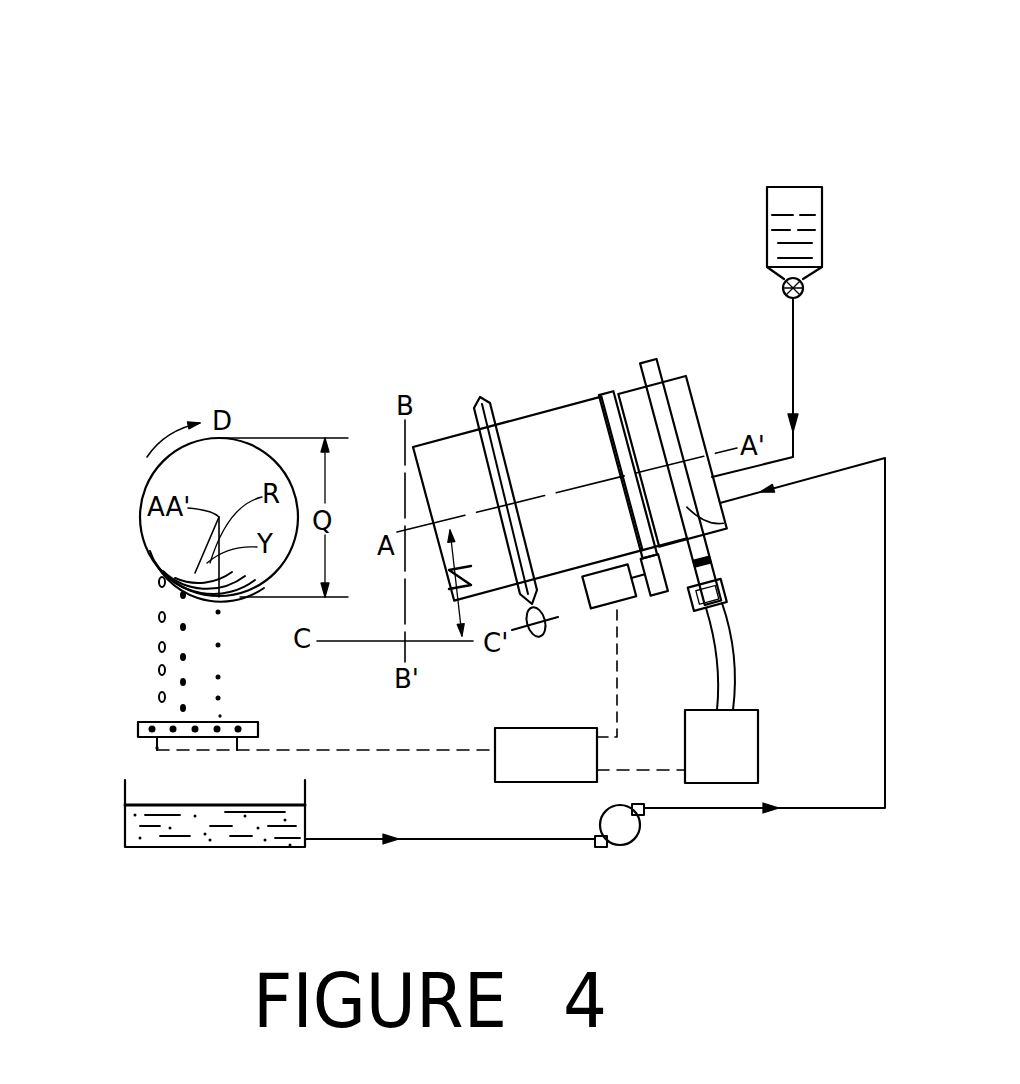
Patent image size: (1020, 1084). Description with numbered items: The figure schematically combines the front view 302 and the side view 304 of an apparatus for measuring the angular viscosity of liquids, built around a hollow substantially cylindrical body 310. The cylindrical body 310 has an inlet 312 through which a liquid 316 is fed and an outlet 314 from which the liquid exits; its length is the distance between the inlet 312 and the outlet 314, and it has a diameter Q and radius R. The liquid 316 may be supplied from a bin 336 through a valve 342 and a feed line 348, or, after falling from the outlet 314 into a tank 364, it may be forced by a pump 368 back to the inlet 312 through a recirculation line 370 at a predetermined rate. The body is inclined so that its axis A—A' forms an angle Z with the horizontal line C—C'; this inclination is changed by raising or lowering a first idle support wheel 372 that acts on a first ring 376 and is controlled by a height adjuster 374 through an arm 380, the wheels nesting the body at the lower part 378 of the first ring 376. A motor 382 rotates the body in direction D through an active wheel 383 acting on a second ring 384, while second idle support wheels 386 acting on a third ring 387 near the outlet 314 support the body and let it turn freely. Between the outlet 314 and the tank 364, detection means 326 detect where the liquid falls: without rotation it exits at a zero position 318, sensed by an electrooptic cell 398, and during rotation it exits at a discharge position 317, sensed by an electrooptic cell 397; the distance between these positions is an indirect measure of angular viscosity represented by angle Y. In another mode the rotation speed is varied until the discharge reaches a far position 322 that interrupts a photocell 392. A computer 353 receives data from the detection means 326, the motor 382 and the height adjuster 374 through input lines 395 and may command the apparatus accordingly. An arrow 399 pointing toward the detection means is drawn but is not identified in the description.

The front view 302 is at (250, 280).
The side view 304 is at (387, 130).
The hollow substantially cylindrical body 310 is at (503, 322).
The inlet 312 is at (694, 400).
The outlet 314 is at (223, 493).
The liquid 316 is at (803, 213).
The discharge position 317 is at (182, 682).
The zero position 318 is at (218, 645).
The far position 322 is at (160, 582).
The detection means 326 is at (258, 730).
The bin 336 is at (767, 230).
The valve 342 is at (805, 288).
The feed line 348 is at (793, 395).
The computer 353 is at (553, 775).
The tank 364 is at (307, 803).
The pump 368 is at (625, 845).
The recirculation line 370 is at (738, 815).
The first idle support wheel 372 is at (705, 600).
The height adjuster 374 is at (727, 750).
The first ring 376 is at (648, 362).
The lower part 378 is at (727, 530).
The arm 380 is at (725, 660).
The motor 382 is at (603, 593).
The active wheel 383 is at (662, 585).
The second ring 384 is at (620, 392).
The second idle support wheels 386 is at (537, 638).
The third ring 387 is at (507, 473).
The photocell 392 is at (173, 748).
The input lines 395 is at (388, 752).
The electrooptic cell 397 is at (173, 750).
The electrooptic cell 398 is at (217, 738).
The drainage direction 399 is at (220, 715).